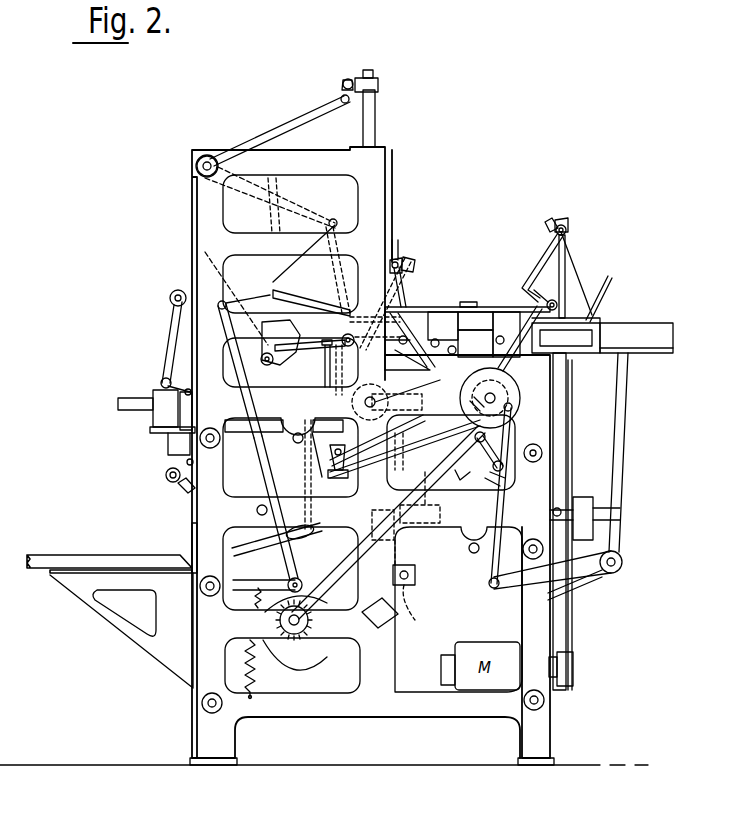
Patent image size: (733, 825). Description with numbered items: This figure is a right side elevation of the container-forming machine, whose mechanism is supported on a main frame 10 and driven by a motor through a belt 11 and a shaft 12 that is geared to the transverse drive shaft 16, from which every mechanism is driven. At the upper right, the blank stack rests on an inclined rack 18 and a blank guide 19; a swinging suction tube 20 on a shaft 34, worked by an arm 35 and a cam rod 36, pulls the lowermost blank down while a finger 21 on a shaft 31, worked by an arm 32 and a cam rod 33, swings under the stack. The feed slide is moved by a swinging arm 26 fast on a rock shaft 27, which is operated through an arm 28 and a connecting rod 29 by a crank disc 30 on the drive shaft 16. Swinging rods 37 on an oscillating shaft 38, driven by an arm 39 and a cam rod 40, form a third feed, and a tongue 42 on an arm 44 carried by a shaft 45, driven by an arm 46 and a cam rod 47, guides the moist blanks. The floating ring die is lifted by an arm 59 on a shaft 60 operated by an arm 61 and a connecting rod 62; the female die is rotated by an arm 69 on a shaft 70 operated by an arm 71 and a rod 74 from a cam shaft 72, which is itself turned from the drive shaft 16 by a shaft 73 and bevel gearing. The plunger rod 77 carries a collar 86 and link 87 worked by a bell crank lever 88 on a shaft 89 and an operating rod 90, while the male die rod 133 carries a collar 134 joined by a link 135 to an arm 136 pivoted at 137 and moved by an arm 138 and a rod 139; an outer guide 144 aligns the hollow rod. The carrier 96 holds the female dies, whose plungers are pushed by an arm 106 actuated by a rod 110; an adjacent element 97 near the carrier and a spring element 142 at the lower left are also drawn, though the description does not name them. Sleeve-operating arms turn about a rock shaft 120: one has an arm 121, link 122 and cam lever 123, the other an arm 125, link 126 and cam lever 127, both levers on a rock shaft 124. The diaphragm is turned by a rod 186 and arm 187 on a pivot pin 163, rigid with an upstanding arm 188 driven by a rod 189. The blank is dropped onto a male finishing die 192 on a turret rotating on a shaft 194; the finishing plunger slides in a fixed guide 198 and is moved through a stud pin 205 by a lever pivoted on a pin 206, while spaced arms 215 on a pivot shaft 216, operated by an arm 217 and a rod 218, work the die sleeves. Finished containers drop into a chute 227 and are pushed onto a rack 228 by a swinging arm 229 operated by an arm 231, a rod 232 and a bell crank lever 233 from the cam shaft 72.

The main frame 10 is at (380, 190).
The belt 11 is at (574, 642).
The shaft 12 is at (567, 395).
The transverse drive shaft 16 is at (510, 378).
The inclined rack 18 is at (608, 292).
The blank guide 19 is at (444, 305).
The swinging suction tube 20 is at (603, 322).
The finger 21 is at (540, 262).
The swinging arm 26 is at (624, 468).
The rock shaft 27 is at (622, 570).
The arm 28 is at (582, 600).
The connecting rod 29 is at (490, 568).
The crank disc 30 is at (480, 358).
The shaft 31 is at (568, 230).
The arm 32 is at (564, 218).
The cam rod 33 is at (546, 220).
The shaft 34 is at (558, 300).
The arm 35 is at (570, 262).
The cam rod 36 is at (522, 310).
The swinging rods 37 is at (410, 292).
The oscillating shaft 38 is at (400, 252).
The arm 39 is at (398, 262).
The cam rod 40 is at (415, 262).
The tongue 42 is at (305, 296).
The arm 44 is at (270, 224).
The shaft 45 is at (333, 219).
The arm 46 is at (340, 243).
The cam rod 47 is at (340, 300).
The arm 59 is at (375, 325).
The shaft 60 is at (410, 312).
The arm 61 is at (410, 341).
The connecting rod 62 is at (443, 333).
The arm 69 is at (378, 288).
The shaft 70 is at (371, 345).
The arm 71 is at (328, 340).
The cam shaft 72 is at (312, 658).
The shaft 73 is at (358, 580).
The rod 74 is at (340, 362).
The rod 77 is at (376, 124).
The collar 86 is at (379, 80).
The link 87 is at (343, 80).
The bell crank lever 88 is at (295, 118).
The shaft 89 is at (208, 155).
The operating rod 90 is at (278, 205).
The carrier 96 is at (416, 407).
The cam 97 is at (415, 398).
The arm 106 is at (165, 440).
The rod 110 is at (391, 440).
The rock shaft 120 is at (284, 467).
The arm 121 is at (390, 450).
The link 122 is at (417, 451).
The cam lever 123 is at (505, 486).
The rock shaft 124 is at (504, 466).
The arm 125 is at (332, 466).
The link 126 is at (338, 478).
The cam lever 127 is at (490, 470).
The rod 133 is at (118, 405).
The collar 134 is at (197, 404).
The link 135 is at (166, 378).
The arm 136 is at (170, 348).
The pivot 137 is at (170, 296).
The arm 138 is at (222, 275).
The rod 139 is at (275, 330).
The spring 142 is at (266, 669).
The outer guide 144 is at (150, 415).
The pivot pin 163 is at (267, 366).
The rod 186 is at (310, 352).
The arm 187 is at (268, 300).
The upstanding arm 188 is at (236, 355).
The rod 189 is at (226, 303).
The male finishing die 192 is at (400, 535).
The shaft 194 is at (372, 520).
The fixed guide 198 is at (594, 512).
The stud pin 205 is at (552, 512).
The pin 206 is at (533, 444).
The spaced arms 215 is at (412, 563).
The pivot shaft 216 is at (412, 585).
The arm 217 is at (423, 610).
The rod 218 is at (429, 497).
The chute 227 is at (192, 540).
The rack 228 is at (38, 555).
The swinging arm 229 is at (185, 492).
The arm 231 is at (165, 462).
The rod 232 is at (262, 500).
The bell crank lever 233 is at (240, 565).